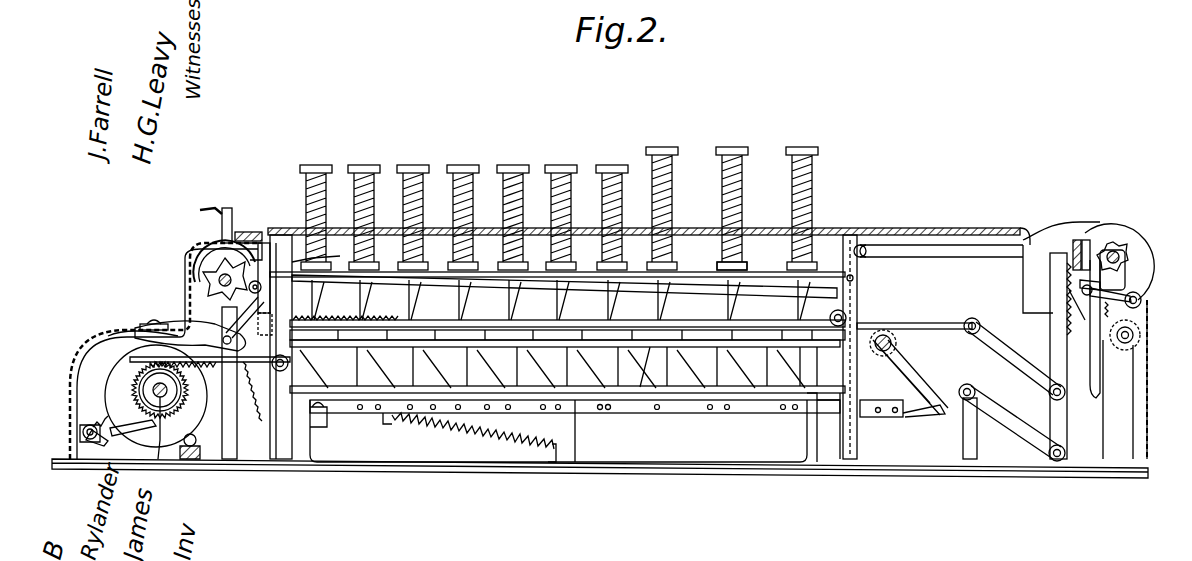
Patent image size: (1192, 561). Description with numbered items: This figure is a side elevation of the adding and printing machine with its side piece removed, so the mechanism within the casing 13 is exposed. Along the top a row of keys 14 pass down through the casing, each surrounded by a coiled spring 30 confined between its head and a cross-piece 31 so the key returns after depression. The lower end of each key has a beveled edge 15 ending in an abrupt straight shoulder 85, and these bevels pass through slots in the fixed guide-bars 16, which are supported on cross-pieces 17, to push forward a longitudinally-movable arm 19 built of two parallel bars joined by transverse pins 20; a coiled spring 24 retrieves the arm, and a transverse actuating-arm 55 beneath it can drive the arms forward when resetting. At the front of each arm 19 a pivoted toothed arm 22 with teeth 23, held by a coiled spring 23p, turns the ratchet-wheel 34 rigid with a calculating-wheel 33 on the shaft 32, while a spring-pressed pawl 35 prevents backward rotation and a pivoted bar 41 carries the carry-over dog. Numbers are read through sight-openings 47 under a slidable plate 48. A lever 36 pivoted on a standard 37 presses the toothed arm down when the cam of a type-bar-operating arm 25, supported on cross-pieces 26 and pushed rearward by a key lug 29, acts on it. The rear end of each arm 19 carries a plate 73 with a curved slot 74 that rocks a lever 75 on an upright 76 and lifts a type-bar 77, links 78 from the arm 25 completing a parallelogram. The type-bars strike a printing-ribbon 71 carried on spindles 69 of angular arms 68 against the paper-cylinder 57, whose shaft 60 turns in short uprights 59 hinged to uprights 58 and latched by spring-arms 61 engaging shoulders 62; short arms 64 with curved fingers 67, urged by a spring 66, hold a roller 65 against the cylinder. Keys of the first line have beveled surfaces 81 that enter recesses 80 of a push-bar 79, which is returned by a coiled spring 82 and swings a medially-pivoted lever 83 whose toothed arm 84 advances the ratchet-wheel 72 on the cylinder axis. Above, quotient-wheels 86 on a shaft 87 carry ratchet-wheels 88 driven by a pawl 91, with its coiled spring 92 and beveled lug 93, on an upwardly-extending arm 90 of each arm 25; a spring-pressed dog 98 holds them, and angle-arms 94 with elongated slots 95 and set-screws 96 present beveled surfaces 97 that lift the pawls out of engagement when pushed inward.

The casing 13 is at (914, 237).
The keys 14 is at (818, 157).
The beveled edges 15 is at (648, 398).
The guide-bars 16 is at (825, 386).
The cross-pieces 17 is at (308, 436).
The longitudinally-movable arm 19 is at (694, 410).
The transverse pins 20 is at (600, 411).
The pivoted toothed arm 22 is at (150, 344).
The teeth 23 is at (182, 392).
The coiled spring 23p is at (249, 391).
The coiled spring 24 is at (478, 442).
The type-bar-operating arms 25 is at (923, 322).
The cross-pieces 26 is at (808, 345).
The beveled lug 29 is at (520, 316).
The coiled spring 30 is at (668, 196).
The cross-piece 31 is at (742, 264).
The shaft 32 is at (160, 455).
The calculating-wheels 33 is at (108, 388).
The ratchet-wheel 34 is at (192, 450).
The spring-pressed pawl 35 is at (138, 425).
The lever 36 is at (224, 336).
The standard 37 is at (232, 440).
The bars 41 is at (208, 450).
The sight-openings 47 is at (140, 340).
The slidable plate 48 is at (150, 322).
The actuating-arm 55 is at (328, 414).
The paper-cylinder 57 is at (1140, 238).
The uprights 58 is at (1118, 413).
The short uprights 59 is at (1125, 278).
The shaft 60 is at (1115, 250).
The spring-arms 61 is at (1090, 365).
The shoulders 62 is at (1097, 338).
The short arms 64 is at (1142, 300).
The roller 65 is at (1068, 300).
The spring 66 is at (1133, 315).
The curved fingers 67 is at (1100, 225).
The angular arms 68 is at (1078, 283).
The spindles 69 is at (1076, 240).
The printing-ribbon 71 is at (1080, 240).
The ratchet-wheel 72 is at (1130, 258).
The plate 73 is at (930, 416).
The curved slot 74 is at (905, 372).
The rocking levers 75 is at (1005, 412).
The uprights 76 is at (975, 452).
The type-bar 77 is at (1052, 296).
The links 78 is at (1002, 336).
The push-bar 79 is at (685, 320).
The recesses 80 is at (622, 316).
The beveled surfaces 81 is at (573, 316).
The coiled spring 82 is at (342, 336).
The medially-pivoted lever 83 is at (856, 278).
The arm 84 is at (944, 248).
The abrupt straight shoulder 85 is at (492, 352).
The quotient-wheels 86 is at (208, 260).
The shaft 87 is at (215, 282).
The ratchet-wheel 88 is at (240, 318).
The upwardly-extending arm 90 is at (298, 276).
The pawl 91 is at (258, 282).
The coiled spring 92 is at (312, 280).
The beveled lug 93 is at (268, 248).
The angle-arms 94 is at (224, 208).
The elongated slots 95 is at (208, 204).
The set-screws 96 is at (248, 232).
The beveled surfaces 97 is at (270, 240).
The spring-pressed dog 98 is at (262, 324).